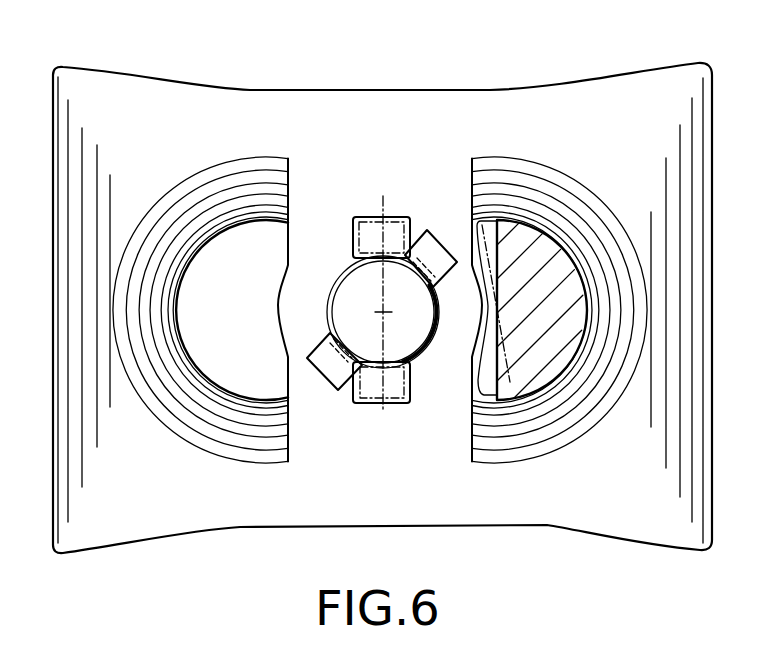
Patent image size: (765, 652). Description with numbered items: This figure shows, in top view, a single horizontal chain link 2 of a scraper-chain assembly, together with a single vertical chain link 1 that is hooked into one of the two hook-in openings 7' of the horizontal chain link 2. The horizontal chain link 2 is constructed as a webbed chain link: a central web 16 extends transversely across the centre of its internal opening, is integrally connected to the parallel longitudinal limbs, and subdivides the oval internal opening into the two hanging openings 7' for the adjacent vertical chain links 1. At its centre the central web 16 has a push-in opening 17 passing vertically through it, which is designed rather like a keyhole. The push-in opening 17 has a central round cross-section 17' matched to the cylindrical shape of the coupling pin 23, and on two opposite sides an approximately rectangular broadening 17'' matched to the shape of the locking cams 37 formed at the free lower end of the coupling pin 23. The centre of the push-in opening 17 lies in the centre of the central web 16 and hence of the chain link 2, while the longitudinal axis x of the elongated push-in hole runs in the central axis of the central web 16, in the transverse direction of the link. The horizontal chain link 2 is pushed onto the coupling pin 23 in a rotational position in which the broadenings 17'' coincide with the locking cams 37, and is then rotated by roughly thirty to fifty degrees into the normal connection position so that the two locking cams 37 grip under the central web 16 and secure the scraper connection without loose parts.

The vertical chain link 1 is at (548, 250).
The horizontal chain link 2 is at (512, 105).
The hanging opening 7' is at (332, 352).
The central web 16 is at (298, 325).
The push-in opening 17 is at (394, 336).
The central round cross-section 17' is at (392, 286).
The broadening 17'' is at (375, 302).
The coupling pin 23 is at (410, 338).
The locking cam 37 is at (433, 245).
The longitudinal axis x is at (381, 301).